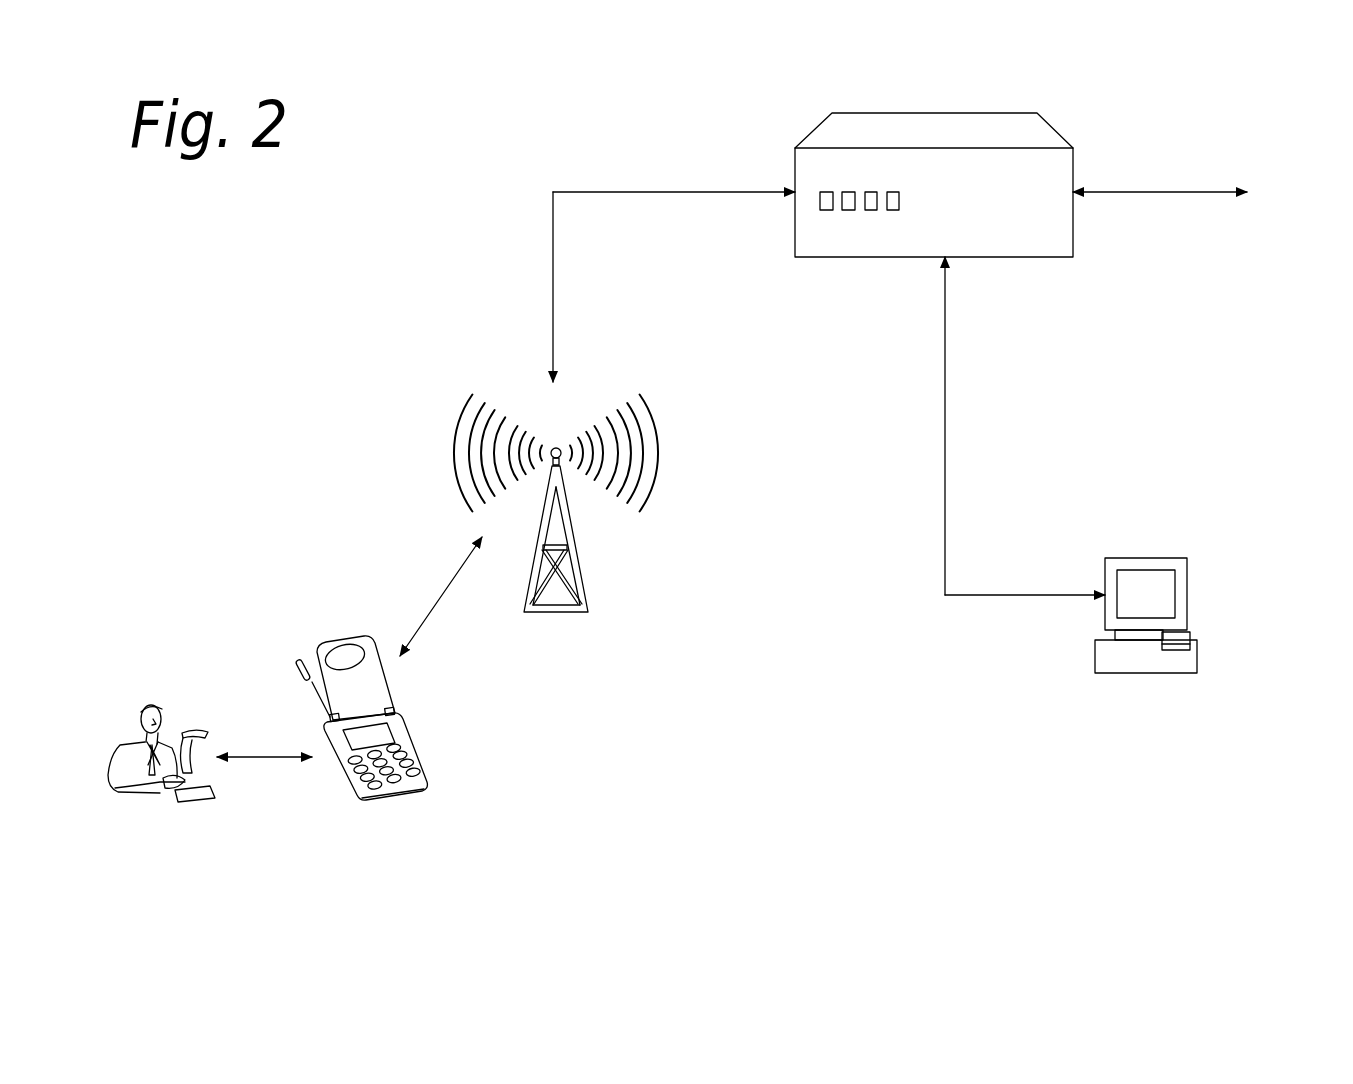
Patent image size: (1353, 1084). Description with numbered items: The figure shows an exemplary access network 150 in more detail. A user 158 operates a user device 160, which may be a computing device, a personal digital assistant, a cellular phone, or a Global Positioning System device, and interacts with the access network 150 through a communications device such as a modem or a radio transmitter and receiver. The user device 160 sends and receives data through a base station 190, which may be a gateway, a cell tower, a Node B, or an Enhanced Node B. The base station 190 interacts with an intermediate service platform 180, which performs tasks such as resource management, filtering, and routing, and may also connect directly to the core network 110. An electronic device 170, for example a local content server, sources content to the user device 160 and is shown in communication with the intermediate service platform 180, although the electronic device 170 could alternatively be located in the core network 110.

The core network 110 is at (1193, 192).
The access network 150 is at (865, 936).
The user 158 is at (157, 805).
The user device 160 is at (372, 798).
The electronic device 170 is at (1165, 548).
The intermediate service platform 180 is at (857, 132).
The base station 190 is at (487, 383).